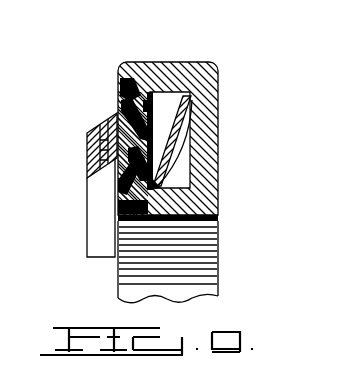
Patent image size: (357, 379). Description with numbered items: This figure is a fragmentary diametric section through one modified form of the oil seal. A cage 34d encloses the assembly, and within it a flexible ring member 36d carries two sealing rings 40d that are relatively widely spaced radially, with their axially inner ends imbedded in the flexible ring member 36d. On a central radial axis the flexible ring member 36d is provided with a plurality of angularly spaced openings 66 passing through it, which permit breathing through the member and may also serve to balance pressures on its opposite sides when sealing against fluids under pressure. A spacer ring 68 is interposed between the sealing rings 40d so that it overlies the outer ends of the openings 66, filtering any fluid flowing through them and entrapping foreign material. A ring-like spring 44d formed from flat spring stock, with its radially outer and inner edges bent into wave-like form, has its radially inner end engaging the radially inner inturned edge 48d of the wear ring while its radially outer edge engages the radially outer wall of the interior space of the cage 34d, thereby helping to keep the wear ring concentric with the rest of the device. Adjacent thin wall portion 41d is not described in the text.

The cage 34d is at (210, 73).
The flexible ring member 36d is at (118, 92).
The sealing rings 40d is at (88, 133).
The inner wall 41d is at (150, 108).
The spring 44d is at (172, 148).
The radially inner inturned edge 48d is at (168, 259).
The openings 66 is at (107, 142).
The spacer ring 68 is at (110, 160).